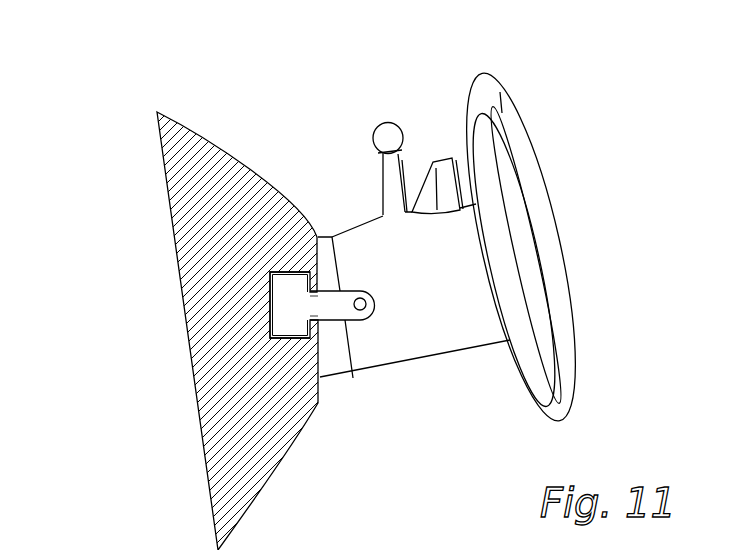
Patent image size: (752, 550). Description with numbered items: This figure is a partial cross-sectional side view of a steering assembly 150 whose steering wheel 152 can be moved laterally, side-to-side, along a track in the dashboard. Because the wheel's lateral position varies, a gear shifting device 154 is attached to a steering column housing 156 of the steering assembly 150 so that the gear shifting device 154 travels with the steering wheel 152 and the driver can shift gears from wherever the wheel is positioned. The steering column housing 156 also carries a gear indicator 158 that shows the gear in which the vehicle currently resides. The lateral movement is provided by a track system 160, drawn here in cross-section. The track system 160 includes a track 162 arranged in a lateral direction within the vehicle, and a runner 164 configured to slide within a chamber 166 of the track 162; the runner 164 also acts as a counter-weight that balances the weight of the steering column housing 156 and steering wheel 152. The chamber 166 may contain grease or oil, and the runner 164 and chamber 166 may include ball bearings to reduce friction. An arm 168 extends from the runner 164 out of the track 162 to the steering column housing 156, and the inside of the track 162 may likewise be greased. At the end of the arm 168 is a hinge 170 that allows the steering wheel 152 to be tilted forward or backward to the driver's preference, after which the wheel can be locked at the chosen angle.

The steering assembly 150 is at (582, 76).
The steering wheel 152 is at (530, 168).
The gear shifting device 154 is at (385, 126).
The steering column housing 156 is at (455, 278).
The gear indicator 158 is at (444, 160).
The track system 160 is at (270, 357).
The track 162 is at (330, 236).
The runner 164 is at (287, 283).
The chamber 166 is at (270, 297).
The arm 168 is at (314, 304).
The hinge 170 is at (378, 305).